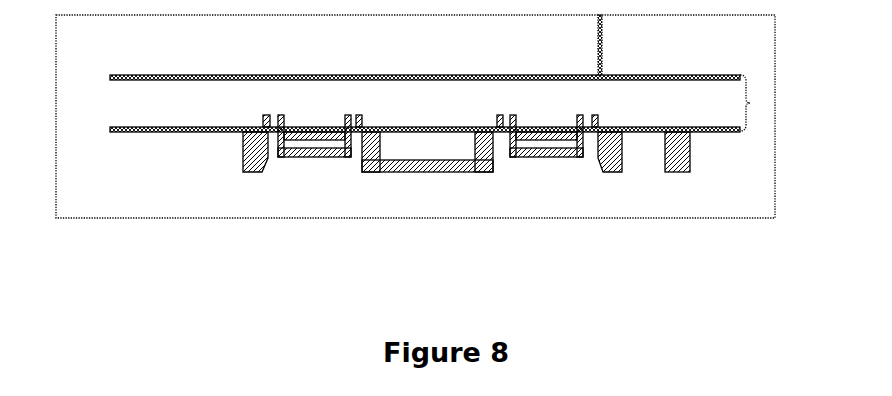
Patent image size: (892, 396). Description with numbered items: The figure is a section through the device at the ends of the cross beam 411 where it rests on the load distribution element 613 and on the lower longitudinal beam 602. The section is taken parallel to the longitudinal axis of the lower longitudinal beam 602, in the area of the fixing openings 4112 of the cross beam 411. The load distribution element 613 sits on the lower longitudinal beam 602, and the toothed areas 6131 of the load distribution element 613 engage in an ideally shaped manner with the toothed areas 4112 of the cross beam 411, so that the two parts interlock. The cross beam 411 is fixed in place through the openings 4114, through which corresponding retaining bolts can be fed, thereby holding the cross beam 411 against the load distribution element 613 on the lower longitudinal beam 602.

The lower longitudinal beam 602 is at (750, 103).
The load distribution element 613 is at (690, 137).
The cross beam 411 is at (262, 170).
The openings 4114 is at (503, 153).
The toothed areas of the cross beam 4112 is at (533, 157).
The toothed areas of the load distribution element 6131 is at (552, 157).